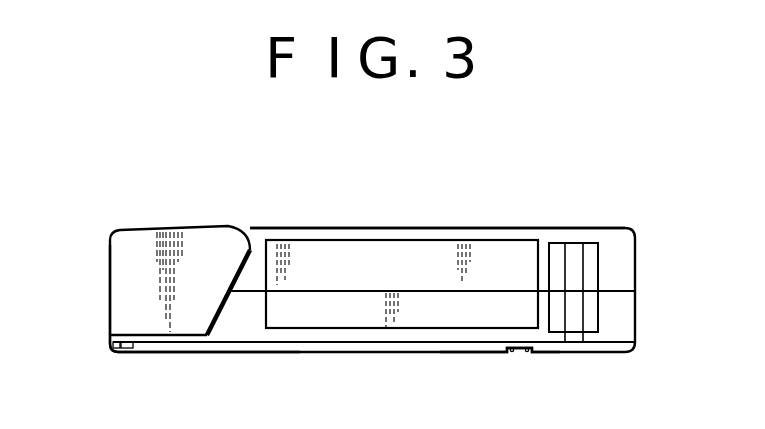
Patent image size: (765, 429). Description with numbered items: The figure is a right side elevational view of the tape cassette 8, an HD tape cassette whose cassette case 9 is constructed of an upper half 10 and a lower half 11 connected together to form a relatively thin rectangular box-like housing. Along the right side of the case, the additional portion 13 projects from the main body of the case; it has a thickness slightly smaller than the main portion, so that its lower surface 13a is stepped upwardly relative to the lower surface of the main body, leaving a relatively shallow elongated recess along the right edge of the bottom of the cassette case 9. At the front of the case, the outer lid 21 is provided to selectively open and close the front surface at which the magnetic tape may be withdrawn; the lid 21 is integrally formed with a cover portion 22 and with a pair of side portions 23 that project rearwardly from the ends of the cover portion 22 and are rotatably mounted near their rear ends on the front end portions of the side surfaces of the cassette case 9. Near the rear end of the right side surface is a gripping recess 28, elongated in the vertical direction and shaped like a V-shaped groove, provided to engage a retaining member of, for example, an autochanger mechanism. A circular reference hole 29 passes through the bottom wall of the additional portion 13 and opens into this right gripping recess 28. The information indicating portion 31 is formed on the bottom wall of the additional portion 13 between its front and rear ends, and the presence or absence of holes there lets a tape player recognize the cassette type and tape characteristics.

The tape cassette 8 is at (558, 203).
The cassette case 9 is at (477, 228).
The upper half 10 is at (385, 228).
The lower half 11 is at (422, 318).
The additional portion 13 is at (277, 334).
The lower surface of the additional portion 13a is at (336, 343).
The outer lid 21 is at (110, 313).
The cover portion 22 is at (111, 256).
The side portions 23 is at (200, 236).
The gripping recess 28 is at (592, 260).
The reference hole 29 is at (561, 337).
The information indicating portion 31 is at (481, 354).